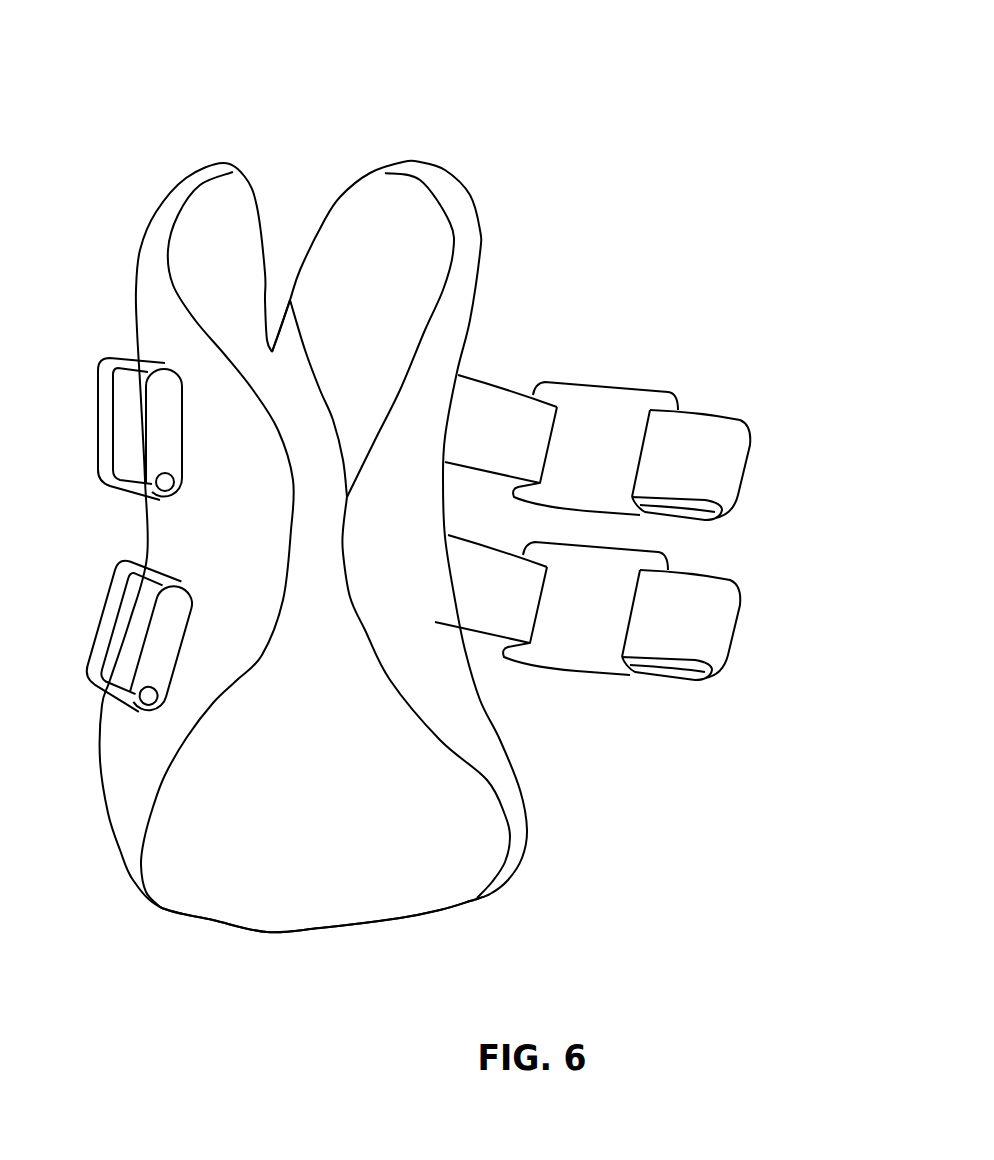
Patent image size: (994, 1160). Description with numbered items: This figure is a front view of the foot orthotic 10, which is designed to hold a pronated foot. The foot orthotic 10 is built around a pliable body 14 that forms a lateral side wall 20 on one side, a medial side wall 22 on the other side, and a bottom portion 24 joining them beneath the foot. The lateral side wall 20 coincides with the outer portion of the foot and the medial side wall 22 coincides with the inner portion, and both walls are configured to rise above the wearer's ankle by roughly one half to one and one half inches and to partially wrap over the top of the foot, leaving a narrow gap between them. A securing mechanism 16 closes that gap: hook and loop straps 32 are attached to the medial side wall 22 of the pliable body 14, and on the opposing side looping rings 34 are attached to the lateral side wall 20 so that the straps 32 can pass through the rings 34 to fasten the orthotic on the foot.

The foot orthotic 10 is at (545, 256).
The pliable body 14 is at (278, 96).
The securing mechanism 16 is at (780, 493).
The lateral side wall 20 is at (227, 585).
The medial side wall 22 is at (407, 585).
The bottom portion 24 is at (273, 868).
The hook and loop straps 32 is at (737, 435).
The looping rings 34 is at (102, 413).